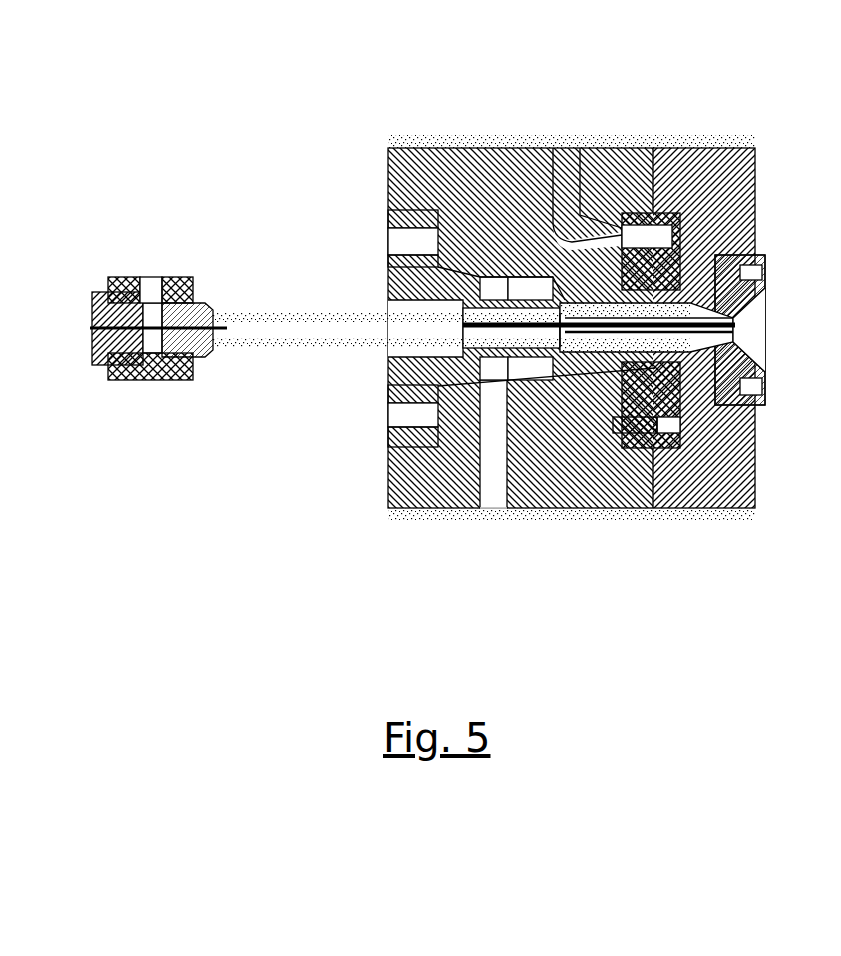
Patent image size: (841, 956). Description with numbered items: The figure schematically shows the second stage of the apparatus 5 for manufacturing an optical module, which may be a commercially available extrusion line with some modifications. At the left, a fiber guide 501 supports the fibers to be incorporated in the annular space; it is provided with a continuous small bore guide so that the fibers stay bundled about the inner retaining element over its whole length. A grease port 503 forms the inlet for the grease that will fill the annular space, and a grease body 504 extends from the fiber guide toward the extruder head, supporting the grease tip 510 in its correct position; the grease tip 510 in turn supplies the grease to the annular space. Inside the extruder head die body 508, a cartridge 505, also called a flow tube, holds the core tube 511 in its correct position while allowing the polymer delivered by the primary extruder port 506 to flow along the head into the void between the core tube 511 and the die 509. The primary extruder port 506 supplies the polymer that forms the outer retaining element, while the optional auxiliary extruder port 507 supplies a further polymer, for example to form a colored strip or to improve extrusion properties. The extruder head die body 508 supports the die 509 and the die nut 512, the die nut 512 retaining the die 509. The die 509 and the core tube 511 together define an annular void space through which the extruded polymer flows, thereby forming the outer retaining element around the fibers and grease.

The apparatus 5 is at (388, 104).
The fiber guide 501 is at (92, 313).
The grease port 503 is at (146, 276).
The grease body 504 is at (292, 312).
The cartridge 505 is at (438, 386).
The primary extruder port 506 is at (497, 522).
The auxiliary extruder port 507 is at (556, 135).
The extruder head die body 508 is at (752, 432).
The die 509 is at (732, 349).
The grease tip 510 is at (733, 329).
The core tube 511 is at (733, 317).
The die nut 512 is at (765, 268).